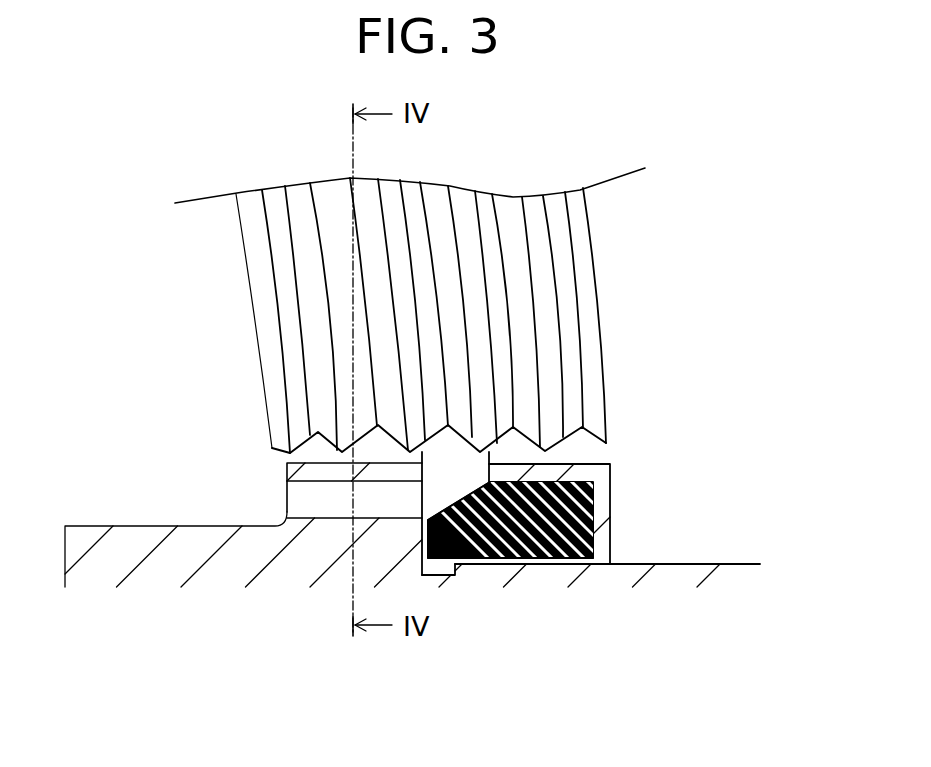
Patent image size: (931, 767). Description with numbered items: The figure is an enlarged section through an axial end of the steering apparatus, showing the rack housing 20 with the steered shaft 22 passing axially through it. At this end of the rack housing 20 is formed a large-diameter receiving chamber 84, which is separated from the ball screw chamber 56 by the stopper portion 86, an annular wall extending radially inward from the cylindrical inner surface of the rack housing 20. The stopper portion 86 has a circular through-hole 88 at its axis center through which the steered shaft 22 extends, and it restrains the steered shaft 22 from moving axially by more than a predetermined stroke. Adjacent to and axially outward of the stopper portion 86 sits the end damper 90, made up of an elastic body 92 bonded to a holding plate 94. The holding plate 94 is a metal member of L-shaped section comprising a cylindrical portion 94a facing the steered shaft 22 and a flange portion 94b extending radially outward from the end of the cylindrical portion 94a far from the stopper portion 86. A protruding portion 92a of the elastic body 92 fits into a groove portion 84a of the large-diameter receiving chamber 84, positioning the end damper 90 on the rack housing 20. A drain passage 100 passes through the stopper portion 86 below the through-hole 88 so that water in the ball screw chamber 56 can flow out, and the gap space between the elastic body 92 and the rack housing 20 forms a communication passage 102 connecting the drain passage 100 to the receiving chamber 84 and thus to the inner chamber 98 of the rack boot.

The rack housing 20 is at (118, 540).
The steered shaft 22 is at (369, 310).
The ball screw chamber 56 is at (225, 370).
The large-diameter receiving chamber 84 is at (555, 467).
The groove portion 84a is at (453, 574).
The stopper portion 86 is at (281, 447).
The through-hole 88 is at (287, 457).
The end damper 90 is at (622, 552).
The elastic body 92 is at (580, 597).
The protruding portion 92a is at (458, 568).
The holding plate 94 is at (615, 579).
The cylindrical portion 94a is at (552, 465).
The flange portion 94b is at (603, 533).
The inner chamber 98 is at (713, 350).
The drain passage 100 is at (307, 503).
The communication passage 102 is at (497, 562).